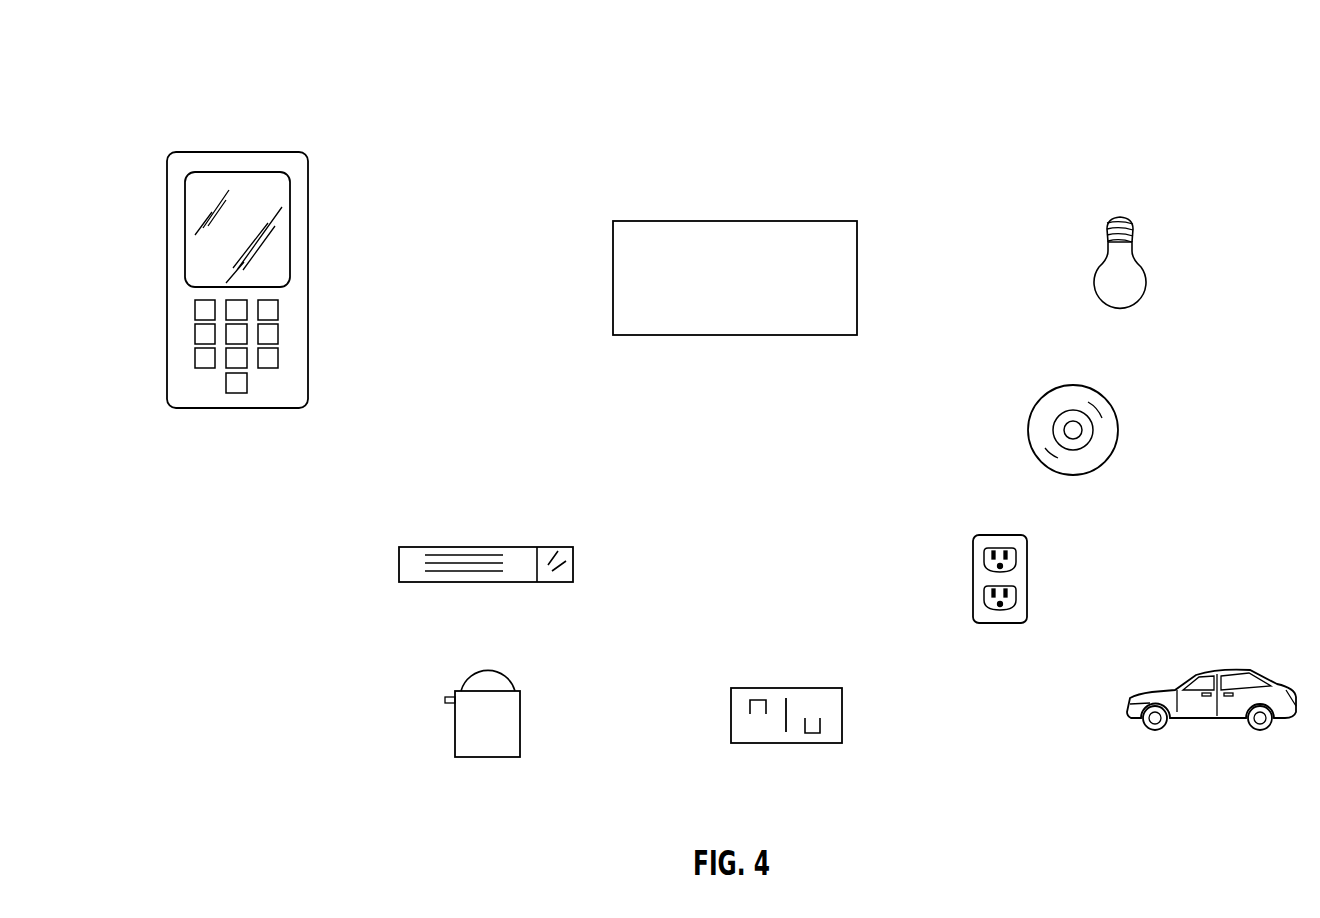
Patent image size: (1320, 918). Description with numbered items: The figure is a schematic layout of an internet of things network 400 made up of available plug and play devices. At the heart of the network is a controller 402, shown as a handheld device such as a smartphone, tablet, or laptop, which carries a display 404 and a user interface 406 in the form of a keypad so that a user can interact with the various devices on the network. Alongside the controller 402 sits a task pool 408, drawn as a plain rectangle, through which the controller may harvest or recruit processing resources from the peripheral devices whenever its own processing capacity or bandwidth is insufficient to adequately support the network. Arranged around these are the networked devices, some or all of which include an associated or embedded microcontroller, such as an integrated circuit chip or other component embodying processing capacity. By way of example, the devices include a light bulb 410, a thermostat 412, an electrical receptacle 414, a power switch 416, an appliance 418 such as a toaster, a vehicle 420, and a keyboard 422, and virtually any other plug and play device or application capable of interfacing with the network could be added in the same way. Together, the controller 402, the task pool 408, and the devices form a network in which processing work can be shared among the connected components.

The internet of things network 400 is at (142, 66).
The controller 402 is at (238, 151).
The display 404 is at (292, 230).
The user interface 406 is at (317, 297).
The task pool 408 is at (670, 220).
The light bulb 410 is at (1146, 272).
The thermostat 412 is at (1101, 398).
The electrical receptacle 414 is at (1029, 580).
The power switch 416 is at (843, 713).
The appliance 418 is at (455, 724).
The vehicle 420 is at (1220, 672).
The keyboard 422 is at (399, 562).